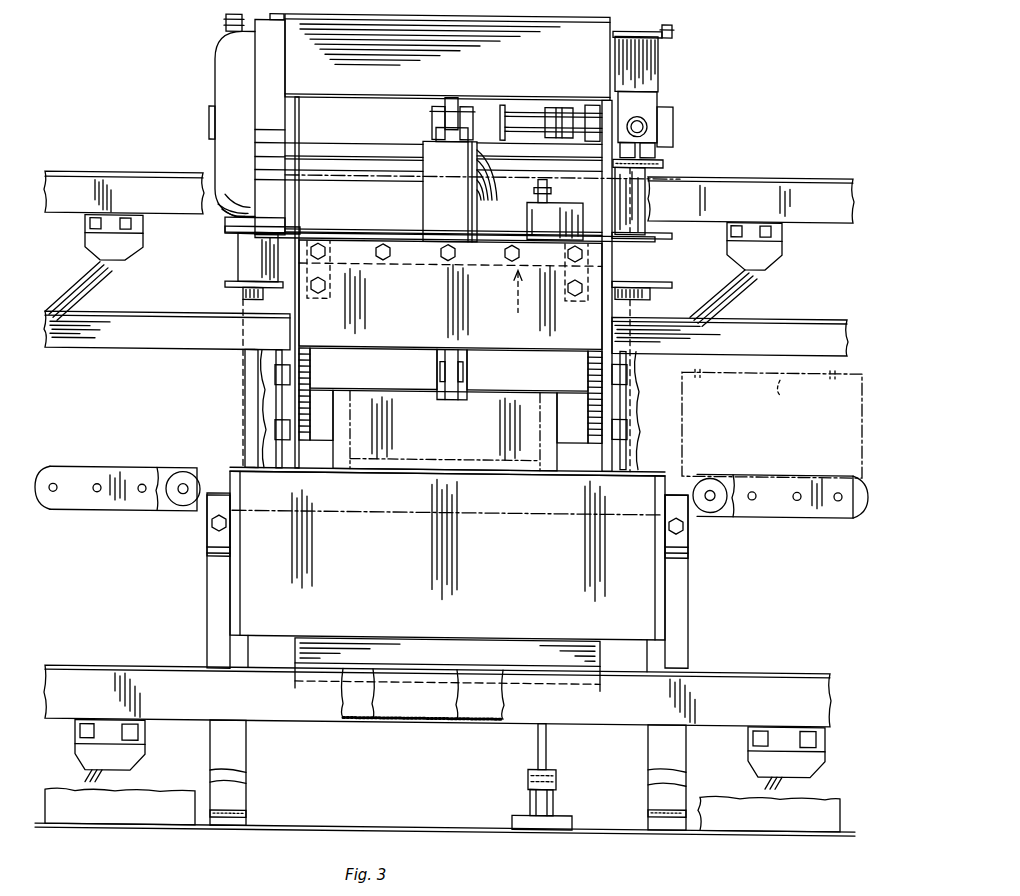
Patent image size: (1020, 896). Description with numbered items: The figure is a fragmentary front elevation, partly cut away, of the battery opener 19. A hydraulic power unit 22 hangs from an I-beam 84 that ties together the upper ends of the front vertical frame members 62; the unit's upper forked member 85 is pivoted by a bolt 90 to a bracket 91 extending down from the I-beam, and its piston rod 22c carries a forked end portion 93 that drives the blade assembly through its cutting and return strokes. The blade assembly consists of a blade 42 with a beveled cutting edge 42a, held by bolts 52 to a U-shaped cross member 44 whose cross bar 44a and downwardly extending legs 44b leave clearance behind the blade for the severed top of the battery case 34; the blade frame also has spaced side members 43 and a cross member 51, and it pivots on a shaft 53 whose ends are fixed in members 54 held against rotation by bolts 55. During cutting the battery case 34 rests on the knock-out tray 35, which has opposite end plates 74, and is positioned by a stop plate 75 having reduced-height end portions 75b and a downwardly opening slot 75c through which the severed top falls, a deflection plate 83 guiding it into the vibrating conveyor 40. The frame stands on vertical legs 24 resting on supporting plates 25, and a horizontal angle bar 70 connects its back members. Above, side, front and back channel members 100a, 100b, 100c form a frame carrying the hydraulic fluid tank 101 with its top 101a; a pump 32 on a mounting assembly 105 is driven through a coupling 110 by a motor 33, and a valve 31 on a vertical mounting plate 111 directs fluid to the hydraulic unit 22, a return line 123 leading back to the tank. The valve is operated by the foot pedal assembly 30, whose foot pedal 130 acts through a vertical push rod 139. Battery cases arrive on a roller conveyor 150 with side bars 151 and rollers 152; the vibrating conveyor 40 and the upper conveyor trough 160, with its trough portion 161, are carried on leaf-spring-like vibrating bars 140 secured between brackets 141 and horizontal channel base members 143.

The battery opener 19 is at (137, 116).
The hydraulic power unit 22 is at (418, 205).
The piston rod 22c is at (462, 353).
The vertical legs 24 is at (207, 633).
The supporting plates 25 is at (338, 803).
The foot pedal assembly 30 is at (519, 786).
The valve 31 is at (530, 198).
The pump 32 is at (680, 111).
The motor 33 is at (211, 61).
The battery case 34 is at (510, 413).
The knock-out tray 35 is at (222, 573).
The conveyor 40 is at (96, 664).
The blade 42 is at (352, 338).
The beveled lower cutting edge 42a is at (392, 338).
The side members 43 is at (311, 368).
The cross member 44 is at (450, 294).
The cross bar 44a is at (500, 291).
The legs 44b is at (450, 287).
The cross member 51 is at (330, 403).
The bolts 52 is at (386, 263).
The shaft 53 is at (260, 432).
The member 54 is at (262, 392).
The bolt 55 is at (270, 372).
The front vertical member 62 is at (298, 204).
The horizontal angle bar 70 is at (207, 528).
The end plates 74 is at (241, 602).
The stop plate 75 is at (557, 472).
The reduced height end portions 75b is at (306, 472).
The slot 75c is at (382, 472).
The deflection plate 83 is at (600, 658).
The I-beam 84 is at (330, 98).
The upper forked member 85 is at (436, 131).
The bolt 90 is at (432, 114).
The bracket 91 is at (451, 96).
The forked end portion 93 is at (460, 376).
The side channel members 100a is at (228, 234).
The front channel member 100b is at (245, 265).
The back channel member 100c is at (672, 241).
The tank 101 is at (647, 78).
The top 101a is at (665, 21).
The mounting assembly 105 is at (665, 164).
The coupling 110 is at (558, 147).
The vertical mounting plate 111 is at (590, 190).
The hydraulic return line 123 is at (525, 829).
The foot pedal 130 is at (553, 767).
The vertical push rod 139 is at (538, 741).
The vibrating bars 140 is at (97, 289).
The bracket 141 is at (130, 248).
The channel base members 143 is at (147, 347).
The roller type conveyor 150 is at (87, 522).
The side bars 151 is at (838, 510).
The rollers 152 is at (712, 473).
The trough 160 is at (72, 163).
The conveyor beam 161 is at (150, 174).